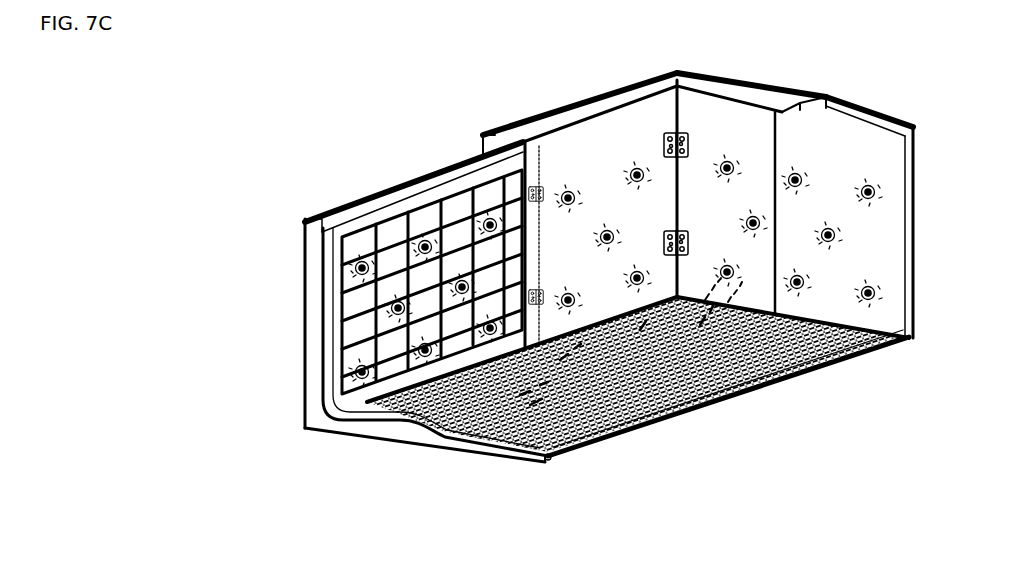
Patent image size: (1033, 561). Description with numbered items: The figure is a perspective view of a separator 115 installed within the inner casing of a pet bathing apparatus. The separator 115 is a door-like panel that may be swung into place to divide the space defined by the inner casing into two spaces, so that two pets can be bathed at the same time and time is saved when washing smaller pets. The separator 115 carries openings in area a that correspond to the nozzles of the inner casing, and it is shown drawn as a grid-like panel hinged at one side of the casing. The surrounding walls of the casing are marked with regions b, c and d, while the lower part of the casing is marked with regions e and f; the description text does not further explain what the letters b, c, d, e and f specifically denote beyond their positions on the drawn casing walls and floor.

The separator 115 is at (428, 205).
The area a is at (433, 282).
The rear left wall section b is at (602, 218).
The rear wall centre section c is at (718, 212).
The right wall panel d is at (846, 243).
The base tray frame e is at (577, 455).
The mesh floor f is at (725, 380).